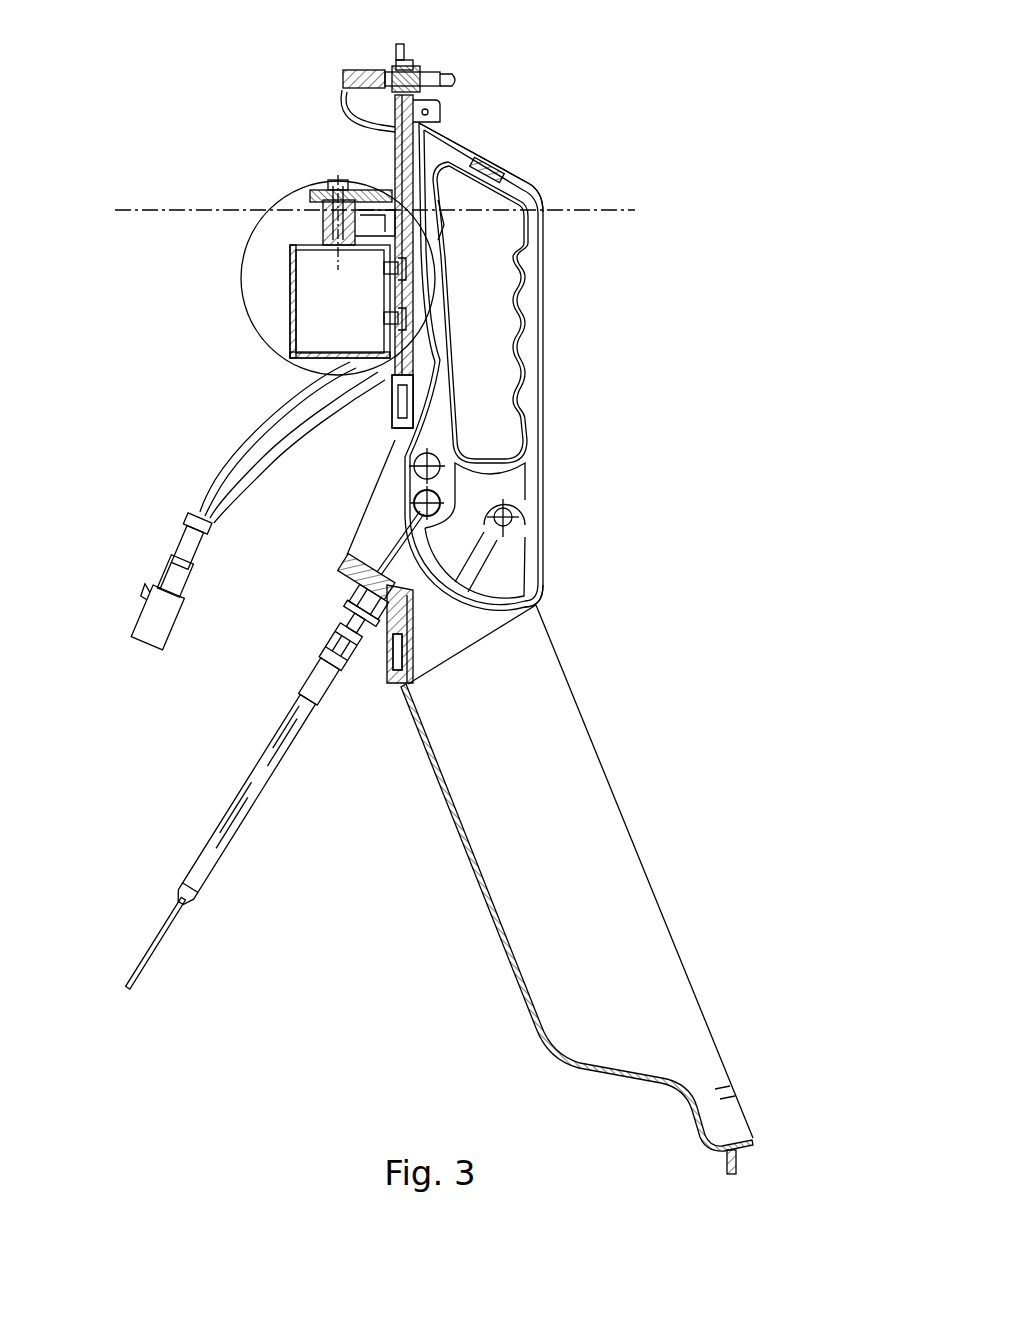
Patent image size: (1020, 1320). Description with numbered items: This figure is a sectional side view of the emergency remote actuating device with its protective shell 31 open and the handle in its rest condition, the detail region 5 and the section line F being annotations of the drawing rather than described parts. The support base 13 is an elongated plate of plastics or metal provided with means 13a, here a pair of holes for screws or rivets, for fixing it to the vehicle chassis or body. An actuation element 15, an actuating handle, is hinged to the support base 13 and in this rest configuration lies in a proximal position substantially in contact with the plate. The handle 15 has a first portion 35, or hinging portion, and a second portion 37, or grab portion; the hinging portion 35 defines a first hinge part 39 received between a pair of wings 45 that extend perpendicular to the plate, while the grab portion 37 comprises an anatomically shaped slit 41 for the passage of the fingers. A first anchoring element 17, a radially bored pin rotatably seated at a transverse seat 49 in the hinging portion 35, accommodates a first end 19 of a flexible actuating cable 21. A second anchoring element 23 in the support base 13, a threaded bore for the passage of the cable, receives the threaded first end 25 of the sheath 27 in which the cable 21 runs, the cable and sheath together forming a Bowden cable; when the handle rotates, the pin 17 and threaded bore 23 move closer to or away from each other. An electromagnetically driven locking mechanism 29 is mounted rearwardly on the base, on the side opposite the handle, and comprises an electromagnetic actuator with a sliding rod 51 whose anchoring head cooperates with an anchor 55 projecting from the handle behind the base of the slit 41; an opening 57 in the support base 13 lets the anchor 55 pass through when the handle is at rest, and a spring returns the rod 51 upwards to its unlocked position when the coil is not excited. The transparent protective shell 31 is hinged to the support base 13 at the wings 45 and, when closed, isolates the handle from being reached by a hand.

The detail region 5 is at (273, 197).
The support base 13 is at (383, 408).
The means for fixing the plate 13a is at (410, 650).
The actuation element 15 is at (548, 412).
The first anchoring element 17 is at (412, 496).
The first end of the flexible actuating cable 19 is at (422, 533).
The flexible actuating cable 21 is at (145, 973).
The second anchoring element 23 is at (352, 556).
The first end of the sheath 25 is at (375, 642).
The sheath 27 is at (243, 822).
The electromagnetically driven locking mechanism 29 is at (248, 355).
The protective shell 31 is at (577, 929).
The first portion (hinging portion) 35 is at (552, 585).
The second portion (grab portion) 37 is at (534, 177).
The first hinge part 39 is at (527, 510).
The slit 41 is at (480, 310).
The wings 45 is at (421, 634).
The transverse seat 49 is at (397, 490).
The sliding rod 51 is at (315, 228).
The anchor 55 is at (390, 190).
The opening 57 is at (425, 262).
The section line F is at (120, 208).